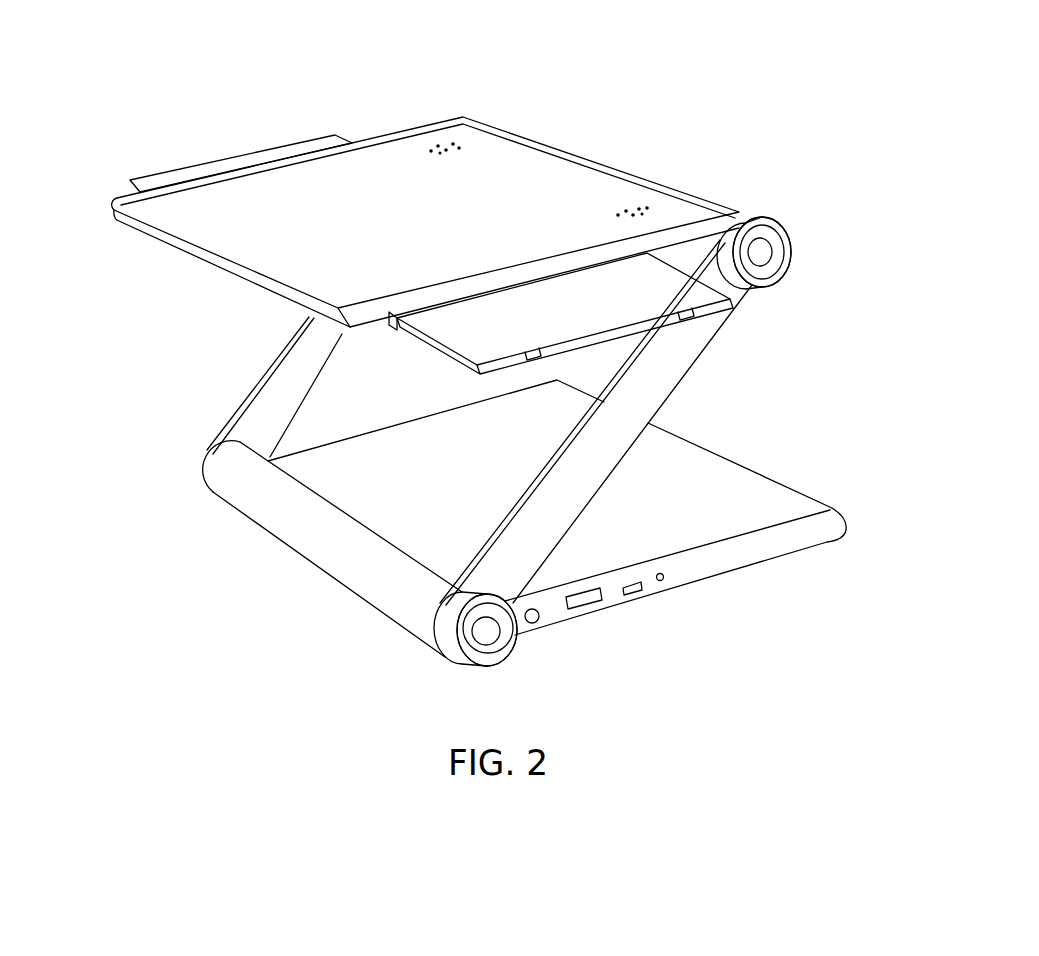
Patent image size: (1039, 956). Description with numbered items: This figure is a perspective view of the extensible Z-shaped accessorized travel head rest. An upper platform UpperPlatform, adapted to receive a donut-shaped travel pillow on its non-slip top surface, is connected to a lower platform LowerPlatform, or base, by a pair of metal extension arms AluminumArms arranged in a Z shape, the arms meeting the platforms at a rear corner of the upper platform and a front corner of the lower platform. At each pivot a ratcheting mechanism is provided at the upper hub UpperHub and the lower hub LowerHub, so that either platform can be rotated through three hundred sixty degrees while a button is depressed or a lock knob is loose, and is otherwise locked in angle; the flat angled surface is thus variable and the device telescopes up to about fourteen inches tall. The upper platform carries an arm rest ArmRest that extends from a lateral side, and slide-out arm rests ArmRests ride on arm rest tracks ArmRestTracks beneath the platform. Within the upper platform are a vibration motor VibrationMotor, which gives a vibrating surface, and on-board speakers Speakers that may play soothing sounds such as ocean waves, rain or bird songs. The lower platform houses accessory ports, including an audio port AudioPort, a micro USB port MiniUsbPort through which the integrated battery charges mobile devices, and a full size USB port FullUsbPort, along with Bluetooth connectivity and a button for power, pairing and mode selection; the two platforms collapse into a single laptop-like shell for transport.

The arm rest ArmRest is at (267, 148).
The upper platform UpperPlatform is at (397, 135).
The vibration motor VibrationMotor is at (545, 163).
The audio speakers Speakers is at (655, 197).
The upper hub UpperHub is at (738, 211).
The arm rests ArmRests is at (608, 330).
The arm rest tracks ArmRestTracks is at (523, 357).
The extension arms AluminumArms is at (608, 457).
The lower hub LowerHub is at (280, 498).
The lower platform LowerPlatform is at (803, 512).
The audio port AudioPort is at (682, 574).
The micro USB port MiniUsbPort is at (653, 591).
The full size USB port FullUsbPort is at (603, 607).